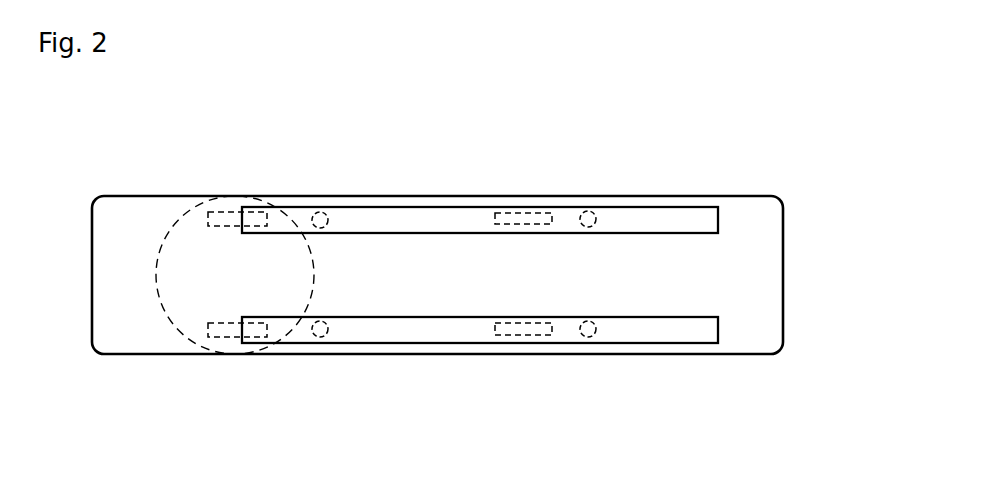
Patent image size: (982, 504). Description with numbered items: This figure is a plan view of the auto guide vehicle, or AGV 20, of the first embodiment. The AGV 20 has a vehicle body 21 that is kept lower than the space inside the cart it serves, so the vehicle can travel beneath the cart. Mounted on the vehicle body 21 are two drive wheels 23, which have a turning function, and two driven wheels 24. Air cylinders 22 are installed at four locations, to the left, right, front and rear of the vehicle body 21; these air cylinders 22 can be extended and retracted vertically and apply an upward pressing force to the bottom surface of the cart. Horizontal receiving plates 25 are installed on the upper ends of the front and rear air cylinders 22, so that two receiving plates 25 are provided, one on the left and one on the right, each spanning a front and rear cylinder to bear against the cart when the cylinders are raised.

The AGV 20 is at (488, 276).
The vehicle body 21 is at (754, 218).
The air cylinders 22 is at (316, 212).
The drive wheels 23 is at (222, 212).
The driven wheels 24 is at (538, 213).
The receiving plates 25 is at (428, 207).